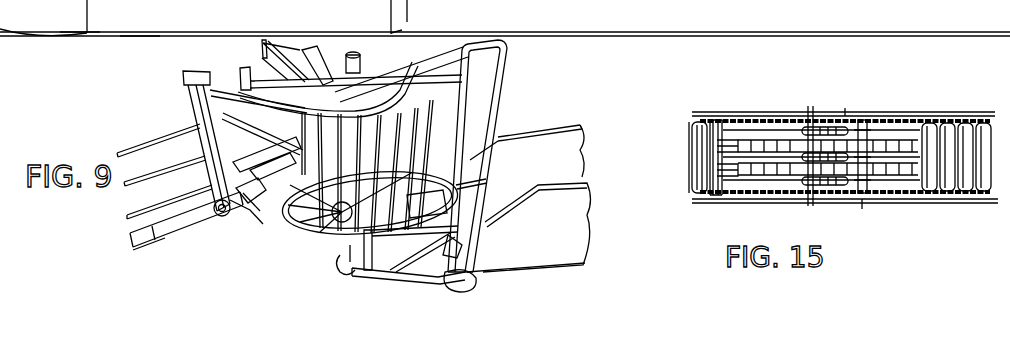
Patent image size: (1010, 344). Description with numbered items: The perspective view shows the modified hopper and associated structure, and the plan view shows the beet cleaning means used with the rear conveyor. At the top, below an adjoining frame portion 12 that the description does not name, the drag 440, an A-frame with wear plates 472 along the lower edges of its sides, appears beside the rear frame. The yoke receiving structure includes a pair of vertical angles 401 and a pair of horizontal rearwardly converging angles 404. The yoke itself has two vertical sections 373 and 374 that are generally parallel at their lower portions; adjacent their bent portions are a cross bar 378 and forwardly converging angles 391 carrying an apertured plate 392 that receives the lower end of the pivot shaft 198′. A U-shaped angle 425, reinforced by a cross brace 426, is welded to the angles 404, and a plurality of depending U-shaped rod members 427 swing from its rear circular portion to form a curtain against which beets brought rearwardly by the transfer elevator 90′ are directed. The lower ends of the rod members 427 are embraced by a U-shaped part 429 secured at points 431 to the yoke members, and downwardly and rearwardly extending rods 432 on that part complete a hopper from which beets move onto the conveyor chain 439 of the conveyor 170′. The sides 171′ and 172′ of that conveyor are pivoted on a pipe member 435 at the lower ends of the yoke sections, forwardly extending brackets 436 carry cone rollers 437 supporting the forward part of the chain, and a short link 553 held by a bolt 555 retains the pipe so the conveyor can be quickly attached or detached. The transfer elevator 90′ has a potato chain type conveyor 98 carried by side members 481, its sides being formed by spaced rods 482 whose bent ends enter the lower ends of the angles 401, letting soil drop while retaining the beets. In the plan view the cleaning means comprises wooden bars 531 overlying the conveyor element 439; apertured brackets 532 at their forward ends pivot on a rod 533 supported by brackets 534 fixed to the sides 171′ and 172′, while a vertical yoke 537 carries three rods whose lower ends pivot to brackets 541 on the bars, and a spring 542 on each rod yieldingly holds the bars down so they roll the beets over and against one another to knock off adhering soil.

In FIG. 9, the frame member 12 is at (412, 22).
In FIG. 9, the drag 440 is at (97, 43).
In FIG. 9, the wear plates 472 is at (140, 33).
In FIG. 9, the vertical angles 401 is at (214, 44).
In FIG. 9, the horizontal rearwardly converging angles 404 is at (262, 50).
In FIG. 9, the cross brace 426 is at (266, 113).
In FIG. 9, the U-shaped angle 425 is at (283, 122).
In FIG. 9, the rods 482 is at (178, 132).
In FIG. 9, the side members 481 is at (130, 239).
In FIG. 9, the transfer elevator 90′ is at (161, 258).
In FIG. 9, the potato chain type conveyor 98 is at (246, 230).
In FIG. 9, the rods 432 is at (272, 210).
In FIG. 9, the pivot shaft 198′ is at (332, 62).
In FIG. 9, the apertured plate 392 is at (392, 60).
In FIG. 9, the forwardly converging angles 391 is at (455, 78).
In FIG. 9, the U-shaped rod members 427 is at (315, 236).
In FIG. 9, the cone rollers 437 is at (342, 263).
In FIG. 9, the U-shaped part 429 is at (406, 242).
In FIG. 9, the forwardly extending brackets 436 is at (385, 273).
In FIG. 9, the securing points 431 is at (455, 232).
In FIG. 9, the pipe member 435 is at (460, 250).
In FIG. 9, the bolt 555 is at (465, 288).
In FIG. 9, the short link 553 is at (480, 285).
In FIG. 9, the cross bar 378 is at (500, 50).
In FIG. 9, the vertical section 373 is at (446, 108).
In FIG. 9, the vertical section 374 is at (487, 145).
In FIG. 9, the conveyor 170′ is at (595, 136).
In FIG. 9, the side 171′ is at (570, 160).
In FIG. 15, the side 171′ is at (855, 200).
In FIG. 9, the side 172′ is at (580, 210).
In FIG. 15, the side 172′ is at (838, 116).
In FIG. 15, the brackets 534 is at (706, 120).
In FIG. 15, the apertured brackets 532 is at (722, 120).
In FIG. 15, the rod 533 is at (706, 158).
In FIG. 15, the bars 531 is at (765, 130).
In FIG. 15, the vertical yoke 537 is at (810, 114).
In FIG. 15, the spring 542 is at (820, 195).
In FIG. 15, the brackets 541 is at (868, 125).
In FIG. 15, the conveyor chain 439 is at (953, 184).